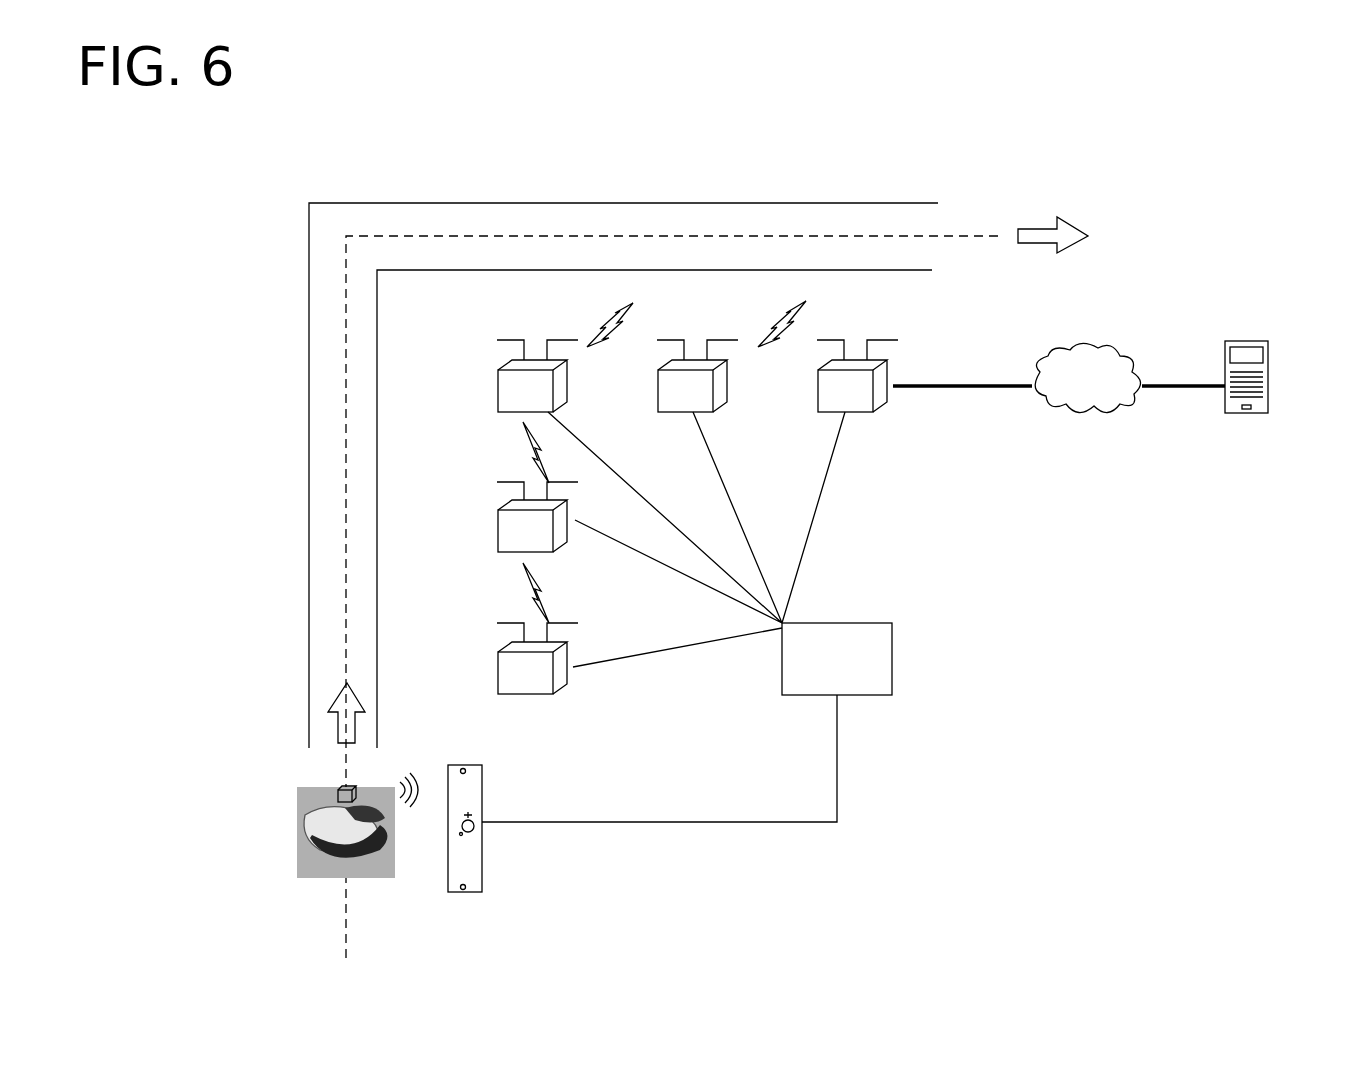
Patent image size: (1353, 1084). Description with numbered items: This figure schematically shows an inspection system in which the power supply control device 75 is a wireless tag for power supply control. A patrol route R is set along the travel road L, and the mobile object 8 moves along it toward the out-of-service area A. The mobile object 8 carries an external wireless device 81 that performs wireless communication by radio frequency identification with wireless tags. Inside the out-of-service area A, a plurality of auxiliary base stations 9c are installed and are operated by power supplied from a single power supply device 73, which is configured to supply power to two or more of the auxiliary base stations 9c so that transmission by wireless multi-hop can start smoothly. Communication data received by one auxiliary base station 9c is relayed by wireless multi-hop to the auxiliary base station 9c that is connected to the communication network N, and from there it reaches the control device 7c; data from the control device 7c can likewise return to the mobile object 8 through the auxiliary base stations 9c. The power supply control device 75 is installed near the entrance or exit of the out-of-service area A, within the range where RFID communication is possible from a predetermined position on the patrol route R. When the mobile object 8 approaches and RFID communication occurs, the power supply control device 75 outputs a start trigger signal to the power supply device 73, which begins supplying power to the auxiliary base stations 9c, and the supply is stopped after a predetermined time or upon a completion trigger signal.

The auxiliary base station 9c is at (572, 362).
The power supply device 73 is at (880, 623).
The power supply control device 75 is at (476, 796).
The mobile object 8 is at (300, 826).
The external wireless device 81 is at (336, 792).
The control device 7c is at (1268, 366).
The communication network N is at (1104, 334).
The out-of-service area A is at (307, 152).
The travel road L is at (307, 443).
The patrol route R is at (996, 231).